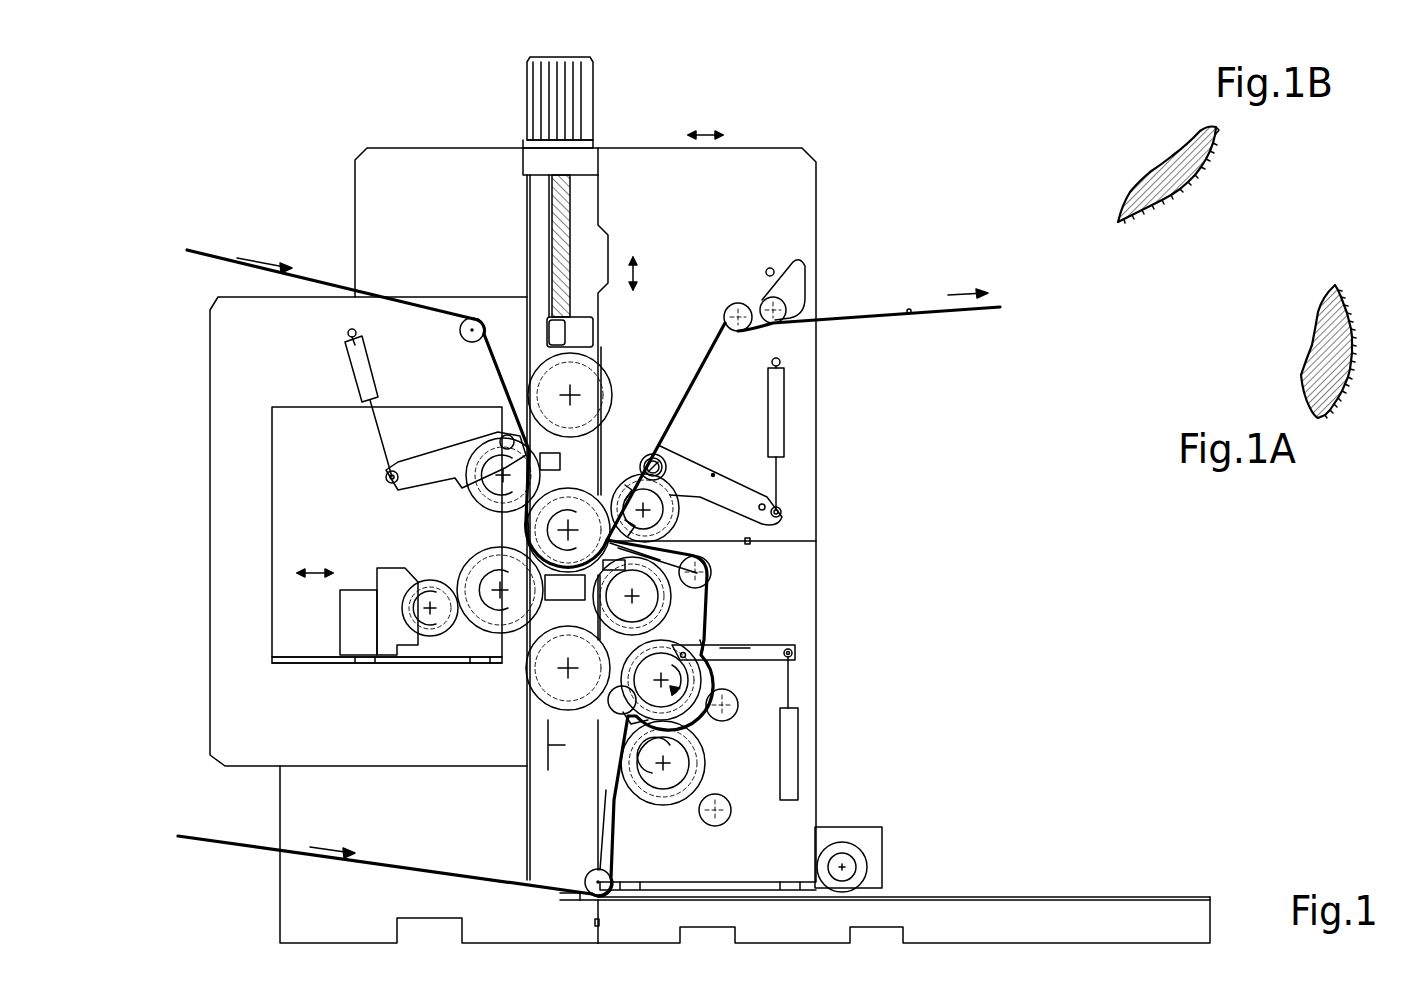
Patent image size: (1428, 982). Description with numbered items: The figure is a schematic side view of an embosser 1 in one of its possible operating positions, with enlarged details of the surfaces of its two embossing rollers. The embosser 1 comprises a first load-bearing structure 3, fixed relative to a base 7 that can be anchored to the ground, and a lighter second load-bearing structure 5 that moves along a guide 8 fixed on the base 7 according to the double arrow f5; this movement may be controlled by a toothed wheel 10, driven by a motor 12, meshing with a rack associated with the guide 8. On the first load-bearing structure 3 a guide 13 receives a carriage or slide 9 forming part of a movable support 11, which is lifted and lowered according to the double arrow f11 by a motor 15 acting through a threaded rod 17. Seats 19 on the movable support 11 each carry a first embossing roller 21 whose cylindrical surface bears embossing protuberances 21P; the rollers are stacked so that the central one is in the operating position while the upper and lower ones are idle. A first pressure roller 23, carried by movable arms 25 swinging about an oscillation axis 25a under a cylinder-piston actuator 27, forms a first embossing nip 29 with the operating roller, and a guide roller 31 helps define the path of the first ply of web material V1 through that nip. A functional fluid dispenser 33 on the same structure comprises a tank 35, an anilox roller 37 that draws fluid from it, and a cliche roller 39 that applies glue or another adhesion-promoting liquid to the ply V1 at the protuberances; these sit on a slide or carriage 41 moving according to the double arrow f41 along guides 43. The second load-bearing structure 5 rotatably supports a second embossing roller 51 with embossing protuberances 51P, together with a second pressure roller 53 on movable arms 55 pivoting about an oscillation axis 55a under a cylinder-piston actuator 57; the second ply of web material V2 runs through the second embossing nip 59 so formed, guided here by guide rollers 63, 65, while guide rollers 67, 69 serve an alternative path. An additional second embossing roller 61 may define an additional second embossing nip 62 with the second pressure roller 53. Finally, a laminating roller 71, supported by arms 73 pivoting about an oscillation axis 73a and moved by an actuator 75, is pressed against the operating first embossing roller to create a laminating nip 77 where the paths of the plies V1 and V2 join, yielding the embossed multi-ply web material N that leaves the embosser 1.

In FIG. 1, the embosser 1 is at (875, 148).
In FIG. 1, the first load-bearing structure 3 is at (367, 189).
In FIG. 1, the second load-bearing structure 5 is at (803, 199).
In FIG. 1, the base 7 is at (1145, 945).
In FIG. 1, the guide 8 is at (1000, 897).
In FIG. 1, the carriage or slide 9 is at (585, 333).
In FIG. 1, the toothed wheel 10 is at (860, 870).
In FIG. 1, the movable support 11 is at (603, 462).
In FIG. 1, the motor 12 is at (872, 830).
In FIG. 1, the guide 13 is at (527, 195).
In FIG. 1, the motor 15 is at (577, 91).
In FIG. 1, the threaded rod 17 is at (560, 223).
In FIG. 1, the seats 19 is at (640, 350).
In FIG. 1, the first embossing roller 21 is at (600, 390).
In FIG. 1A, the first embossing roller 21 is at (1327, 360).
In FIG. 1A, the embossing protuberances 21P is at (1352, 322).
In FIG. 1, the first pressure roller 23 is at (470, 506).
In FIG. 1, the movable arms 25 is at (452, 462).
In FIG. 1, the oscillation axis 25a is at (505, 436).
In FIG. 1, the cylinder-piston actuator 27 is at (365, 378).
In FIG. 1, the first embossing nip 29 is at (520, 525).
In FIG. 1, the guide roller 31 is at (460, 332).
In FIG. 1, the functional fluid dispenser 33 is at (377, 556).
In FIG. 1, the functional fluid tank 35 is at (410, 645).
In FIG. 1, the anilox roller 37 is at (432, 636).
In FIG. 1, the cliche roller 39 is at (492, 620).
In FIG. 1, the slide or carriage 41 is at (352, 638).
In FIG. 1, the guides 43 is at (363, 665).
In FIG. 1, the second embossing roller 51 is at (653, 803).
In FIG. 1B, the second embossing roller 51 is at (1175, 160).
In FIG. 1B, the embossing protuberances 51P is at (1207, 165).
In FIG. 1, the second pressure roller 53 is at (600, 828).
In FIG. 1, the movable arms 55 is at (766, 655).
In FIG. 1, the oscillation axis 55a is at (620, 793).
In FIG. 1, the cylinder-piston actuator 57 is at (792, 739).
In FIG. 1, the second embossing nip 59 is at (690, 718).
In FIG. 1, the additional second embossing roller 61 is at (642, 560).
In FIG. 1, the additional second embossing nip 62 is at (668, 634).
In FIG. 1, the guide roller 63 is at (602, 895).
In FIG. 1, the guide roller 65 is at (710, 577).
In FIG. 1, the guide roller 67 is at (732, 703).
In FIG. 1, the guide roller 69 is at (718, 825).
In FIG. 1, the laminating roller 71 is at (663, 492).
In FIG. 1, the arms 73 is at (740, 492).
In FIG. 1, the oscillation axis 73a is at (668, 466).
In FIG. 1, the actuator 75 is at (776, 413).
In FIG. 1, the laminating nip 77 is at (705, 583).
In FIG. 1, the first ply of web material V1 is at (218, 252).
In FIG. 1, the second ply of web material V2 is at (248, 848).
In FIG. 1, the embossed multi-ply web material N is at (906, 312).
In FIG. 1, the double arrow f5 is at (708, 135).
In FIG. 1, the double arrow f11 is at (640, 276).
In FIG. 1, the double arrow f41 is at (312, 573).